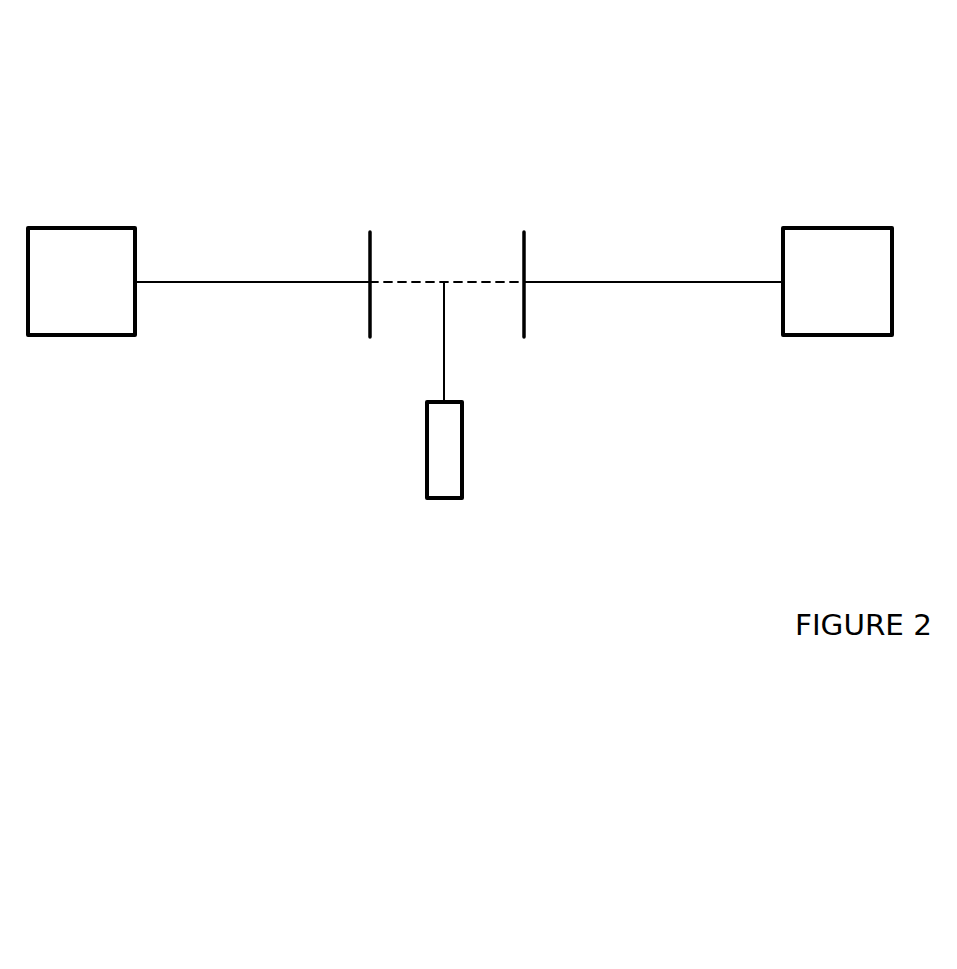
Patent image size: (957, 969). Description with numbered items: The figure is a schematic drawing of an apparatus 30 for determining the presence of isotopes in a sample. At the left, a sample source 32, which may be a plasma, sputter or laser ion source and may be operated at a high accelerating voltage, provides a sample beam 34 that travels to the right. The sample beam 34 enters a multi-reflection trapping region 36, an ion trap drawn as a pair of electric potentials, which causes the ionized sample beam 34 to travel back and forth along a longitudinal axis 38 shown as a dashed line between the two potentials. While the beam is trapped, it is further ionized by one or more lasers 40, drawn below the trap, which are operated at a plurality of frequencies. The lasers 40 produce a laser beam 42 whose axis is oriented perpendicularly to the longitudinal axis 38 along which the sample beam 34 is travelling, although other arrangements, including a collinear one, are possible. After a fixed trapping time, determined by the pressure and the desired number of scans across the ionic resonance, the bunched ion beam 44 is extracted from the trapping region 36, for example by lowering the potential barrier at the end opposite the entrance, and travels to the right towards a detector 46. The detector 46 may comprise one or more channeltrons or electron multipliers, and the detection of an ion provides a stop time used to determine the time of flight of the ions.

The apparatus 30 is at (284, 69).
The sample source 32 is at (80, 336).
The sample beam 34 is at (257, 285).
The multi-reflection trapping region 36 is at (527, 250).
The longitudinal axis 38 is at (413, 279).
The lasers 40 is at (427, 430).
The laser beam 42 is at (446, 345).
The bunched ion beam 44 is at (622, 285).
The detector 46 is at (785, 337).